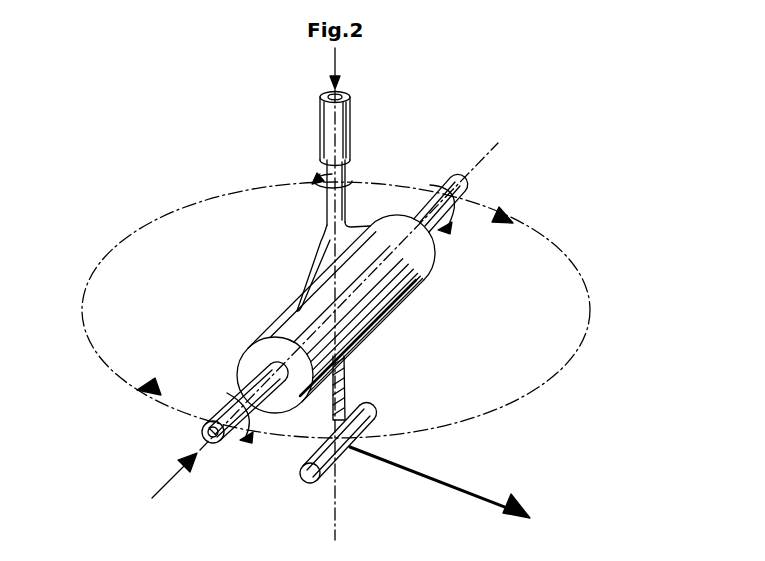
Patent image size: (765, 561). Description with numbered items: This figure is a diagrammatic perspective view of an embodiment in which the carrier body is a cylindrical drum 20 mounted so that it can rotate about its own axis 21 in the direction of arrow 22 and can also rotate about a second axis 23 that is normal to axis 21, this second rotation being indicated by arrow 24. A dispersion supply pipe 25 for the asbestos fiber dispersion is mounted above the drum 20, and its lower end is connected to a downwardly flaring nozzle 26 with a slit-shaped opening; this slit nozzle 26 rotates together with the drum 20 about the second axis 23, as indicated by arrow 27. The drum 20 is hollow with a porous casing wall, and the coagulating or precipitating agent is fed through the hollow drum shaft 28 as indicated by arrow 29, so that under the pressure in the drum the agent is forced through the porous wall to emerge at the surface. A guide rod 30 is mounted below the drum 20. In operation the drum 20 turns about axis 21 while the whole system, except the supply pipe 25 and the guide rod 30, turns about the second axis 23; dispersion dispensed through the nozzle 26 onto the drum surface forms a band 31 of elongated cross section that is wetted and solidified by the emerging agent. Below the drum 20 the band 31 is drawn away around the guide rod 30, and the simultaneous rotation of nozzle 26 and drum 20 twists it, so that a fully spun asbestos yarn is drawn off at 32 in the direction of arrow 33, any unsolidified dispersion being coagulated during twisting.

The cylindrical drum 20 is at (430, 270).
The drum axis 21 is at (492, 154).
The arrow of drum rotation 22 is at (465, 220).
The second axis 23 is at (337, 507).
The arrow of rotation about second axis 24 is at (547, 223).
The dispersion supply pipe 25 is at (347, 117).
The slit nozzle 26 is at (352, 232).
The arrow of nozzle rotation 27 is at (322, 191).
The hollow drum shaft 28 is at (202, 430).
The arrow of agent feed 29 is at (167, 492).
The guide rod 30 is at (376, 413).
The asbestos fiber band 31 is at (403, 308).
The yarn draw-off point 32 is at (453, 487).
The arrow of yarn draw-off direction 33 is at (497, 505).